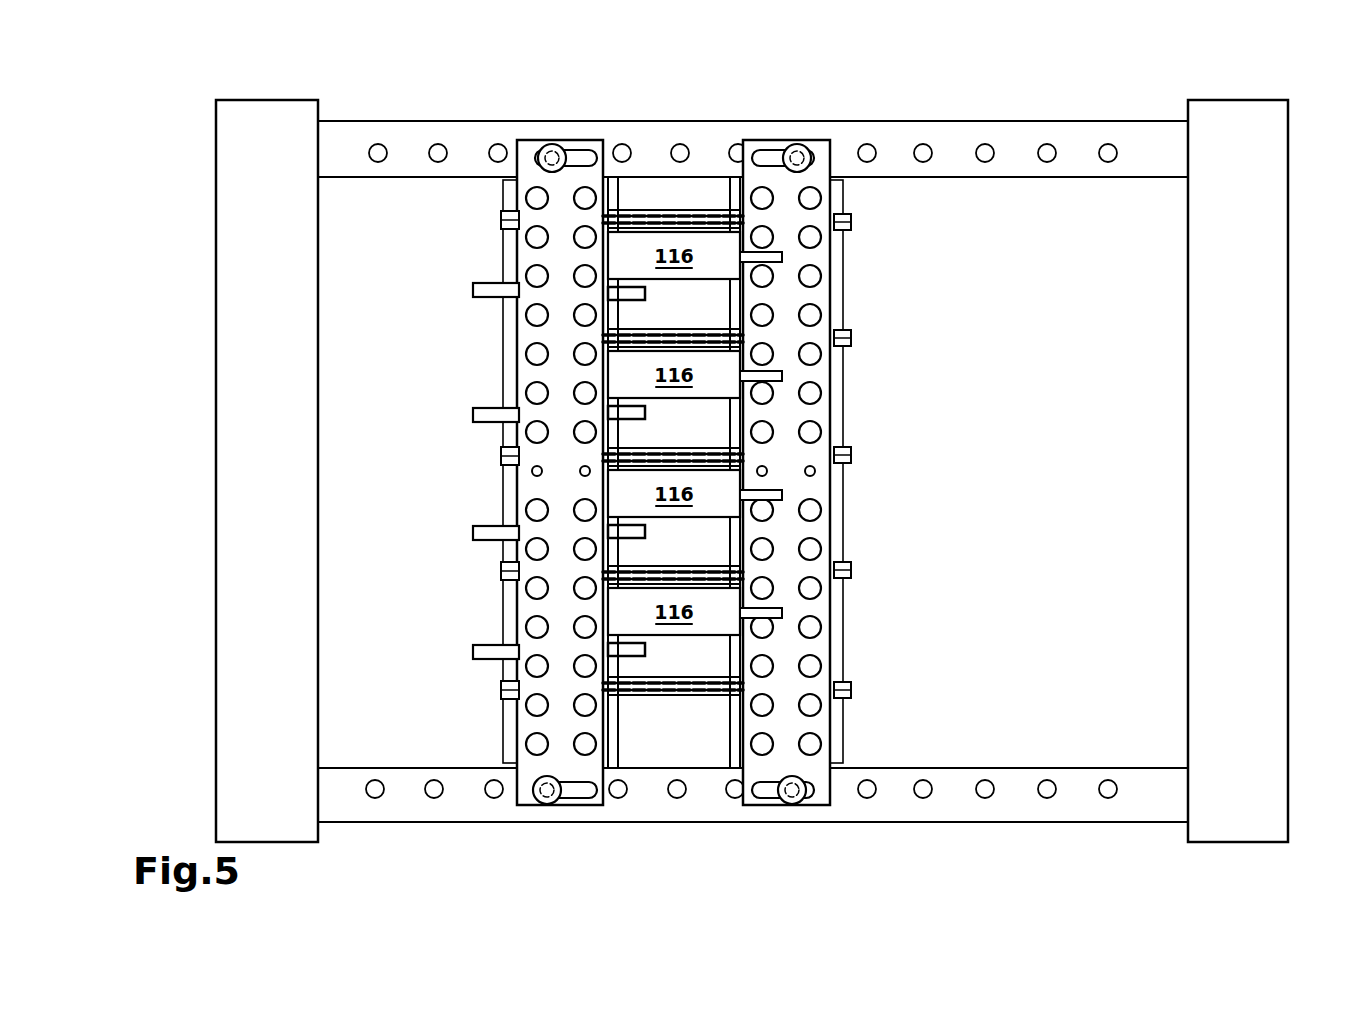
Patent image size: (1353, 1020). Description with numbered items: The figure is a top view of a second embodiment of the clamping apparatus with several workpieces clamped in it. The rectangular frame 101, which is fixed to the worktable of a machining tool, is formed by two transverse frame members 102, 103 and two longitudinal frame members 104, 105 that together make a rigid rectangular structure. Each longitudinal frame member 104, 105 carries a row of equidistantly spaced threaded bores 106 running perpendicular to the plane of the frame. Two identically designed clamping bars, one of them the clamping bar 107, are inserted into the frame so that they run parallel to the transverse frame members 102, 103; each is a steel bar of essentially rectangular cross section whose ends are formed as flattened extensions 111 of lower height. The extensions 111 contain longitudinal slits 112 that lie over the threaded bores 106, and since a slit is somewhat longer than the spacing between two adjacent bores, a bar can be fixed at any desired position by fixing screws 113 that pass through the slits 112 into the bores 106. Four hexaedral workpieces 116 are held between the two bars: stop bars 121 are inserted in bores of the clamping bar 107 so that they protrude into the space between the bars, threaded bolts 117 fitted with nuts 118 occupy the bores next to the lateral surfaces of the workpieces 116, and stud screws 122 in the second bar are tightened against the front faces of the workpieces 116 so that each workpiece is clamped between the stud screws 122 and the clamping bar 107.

The rectangular frame 101 is at (740, 471).
The transverse frame member 102 is at (1242, 803).
The transverse frame member 103 is at (233, 800).
The longitudinal frame member 104 is at (344, 128).
The longitudinal frame member 105 is at (348, 813).
The threaded bores 106 is at (924, 144).
The clamping bar 107 is at (527, 377).
The flattened extension 111 is at (631, 487).
The longitudinal slit 112 is at (767, 153).
The fixing screw 113 is at (552, 145).
The workpiece 116 is at (673, 473).
The threaded bolt 117 is at (504, 214).
The nut 118 is at (845, 222).
The stop bar 121 is at (472, 291).
The stud screw 122 is at (782, 257).